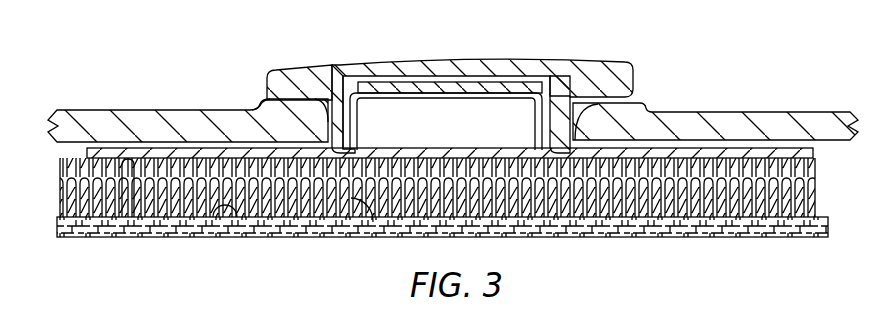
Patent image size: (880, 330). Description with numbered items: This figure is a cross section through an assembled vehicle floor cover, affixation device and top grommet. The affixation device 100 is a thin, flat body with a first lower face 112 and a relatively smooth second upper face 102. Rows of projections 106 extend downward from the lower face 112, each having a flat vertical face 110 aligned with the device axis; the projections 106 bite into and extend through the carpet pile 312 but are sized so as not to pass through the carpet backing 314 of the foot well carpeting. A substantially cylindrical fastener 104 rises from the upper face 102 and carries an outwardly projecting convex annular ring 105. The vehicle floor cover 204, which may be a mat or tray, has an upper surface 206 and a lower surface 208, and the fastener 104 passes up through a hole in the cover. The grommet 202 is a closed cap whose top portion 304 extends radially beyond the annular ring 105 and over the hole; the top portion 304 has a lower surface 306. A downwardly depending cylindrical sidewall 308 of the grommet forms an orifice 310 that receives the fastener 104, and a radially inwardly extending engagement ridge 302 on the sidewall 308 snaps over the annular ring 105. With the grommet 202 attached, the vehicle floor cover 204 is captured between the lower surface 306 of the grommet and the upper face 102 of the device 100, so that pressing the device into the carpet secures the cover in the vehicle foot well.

The affixation device 100 is at (176, 138).
The second upper face 102 is at (688, 148).
The fastener 104 is at (493, 82).
The annular ring 105 is at (566, 78).
The projections 106 is at (630, 186).
The flat vertical face 110 is at (625, 193).
The first lower face 112 is at (125, 163).
The grommet 202 is at (449, 60).
The vehicle floor cover 204 is at (751, 104).
The upper surface 206 is at (802, 110).
The lower surface 208 is at (828, 145).
The engagement ridge 302 is at (356, 142).
The top portion 304 is at (281, 82).
The lower surface of the grommet 306 is at (268, 102).
The cylindrical sidewall 308 is at (358, 68).
The orifice 310 is at (472, 136).
The carpet pile 312 is at (373, 222).
The carpet backing 314 is at (237, 217).